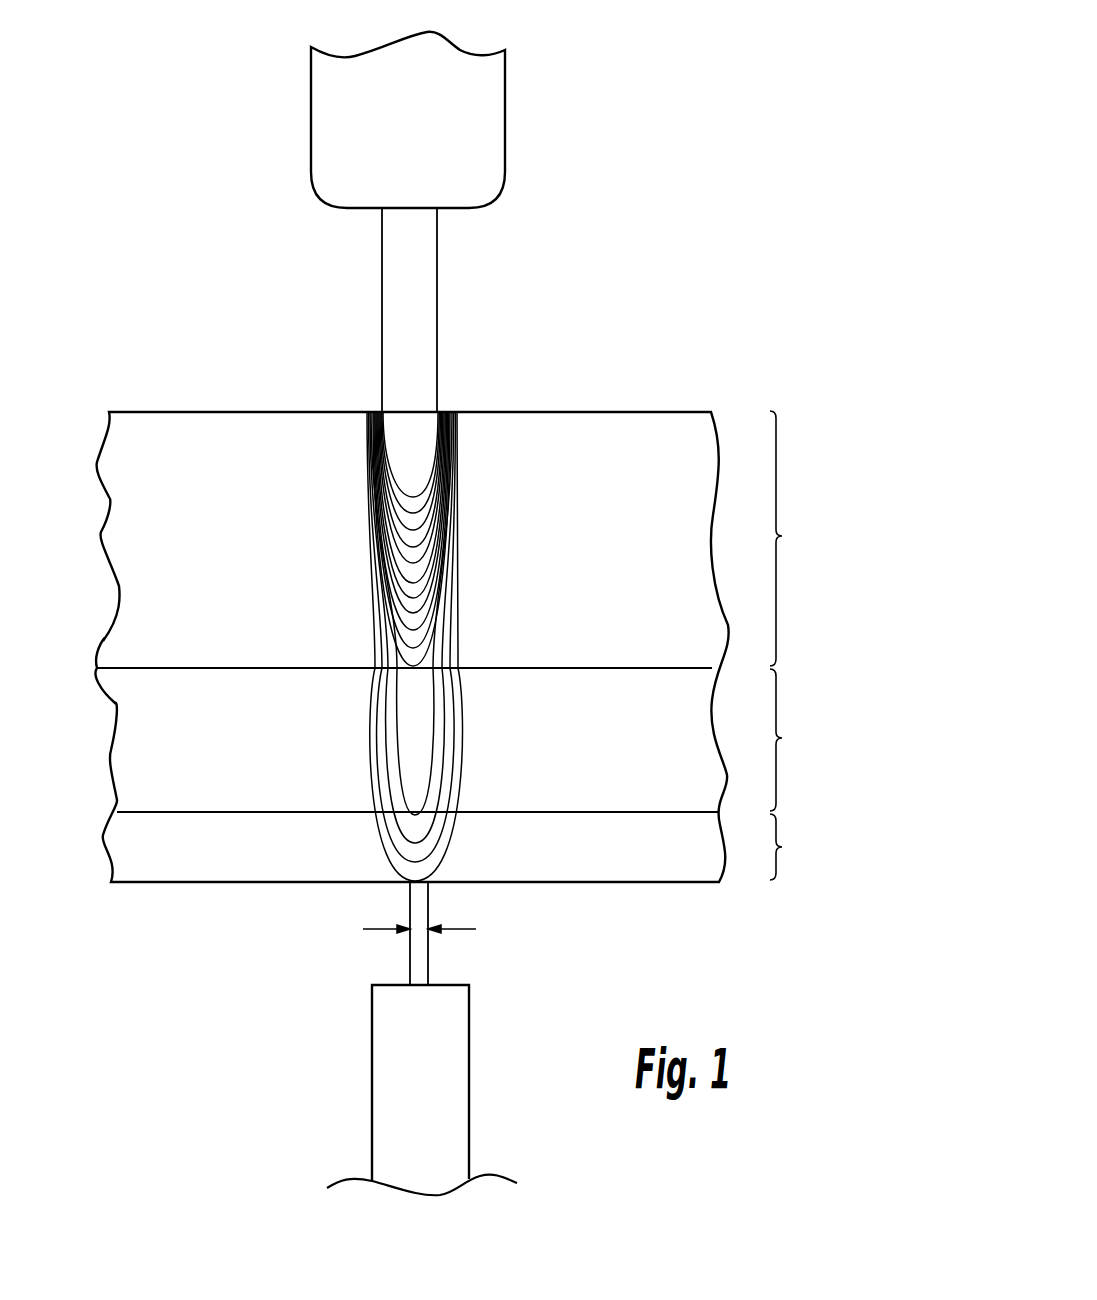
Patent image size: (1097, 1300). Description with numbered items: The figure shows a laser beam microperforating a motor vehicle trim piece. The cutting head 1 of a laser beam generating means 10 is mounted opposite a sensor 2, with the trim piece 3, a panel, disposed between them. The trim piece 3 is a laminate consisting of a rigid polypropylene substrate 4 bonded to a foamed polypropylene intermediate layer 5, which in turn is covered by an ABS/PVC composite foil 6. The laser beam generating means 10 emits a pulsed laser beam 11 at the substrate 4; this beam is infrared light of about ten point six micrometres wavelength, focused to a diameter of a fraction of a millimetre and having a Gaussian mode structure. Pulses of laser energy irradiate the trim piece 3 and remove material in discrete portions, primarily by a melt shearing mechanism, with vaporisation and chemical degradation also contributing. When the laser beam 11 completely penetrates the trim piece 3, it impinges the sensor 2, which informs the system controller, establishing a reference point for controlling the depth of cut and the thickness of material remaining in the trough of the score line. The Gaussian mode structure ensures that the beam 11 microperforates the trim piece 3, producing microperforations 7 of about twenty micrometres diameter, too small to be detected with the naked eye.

The cutting head 1 is at (327, 135).
The sensor 2 is at (390, 1076).
The trim piece 3 is at (670, 374).
The rigid polypropylene substrate 4 is at (600, 551).
The foamed polypropylene intermediate layer 5 is at (600, 753).
The ABS/PVC composite foil 6 is at (600, 863).
The microperforations 7 is at (418, 887).
The laser beam generating means 10 is at (359, 24).
The pulsed laser beam 11 is at (400, 318).